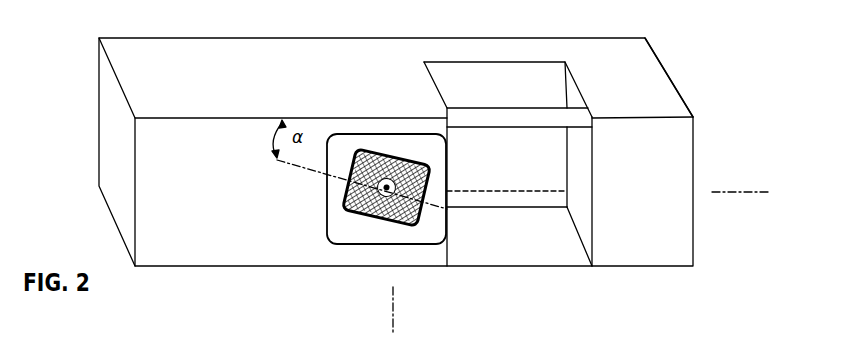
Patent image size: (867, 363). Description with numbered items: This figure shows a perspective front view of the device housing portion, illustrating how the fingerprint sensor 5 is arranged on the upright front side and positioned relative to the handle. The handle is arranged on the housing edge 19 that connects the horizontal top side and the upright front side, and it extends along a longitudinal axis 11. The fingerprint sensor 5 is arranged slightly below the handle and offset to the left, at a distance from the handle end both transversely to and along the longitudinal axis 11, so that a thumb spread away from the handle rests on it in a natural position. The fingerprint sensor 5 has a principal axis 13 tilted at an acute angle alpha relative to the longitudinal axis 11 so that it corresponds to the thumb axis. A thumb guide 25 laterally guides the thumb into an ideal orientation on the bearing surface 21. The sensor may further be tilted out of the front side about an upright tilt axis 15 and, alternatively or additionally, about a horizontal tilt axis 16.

The longitudinal axis 11 is at (752, 117).
The fingerprint sensor 5 is at (394, 148).
The thumb guide 25 is at (367, 150).
The bearing surface 21 is at (345, 209).
The principal axis 13 is at (305, 171).
The upright tilt axis 15 is at (392, 312).
The horizontal tilt axis 16 is at (733, 193).
The housing edge 19 is at (677, 117).